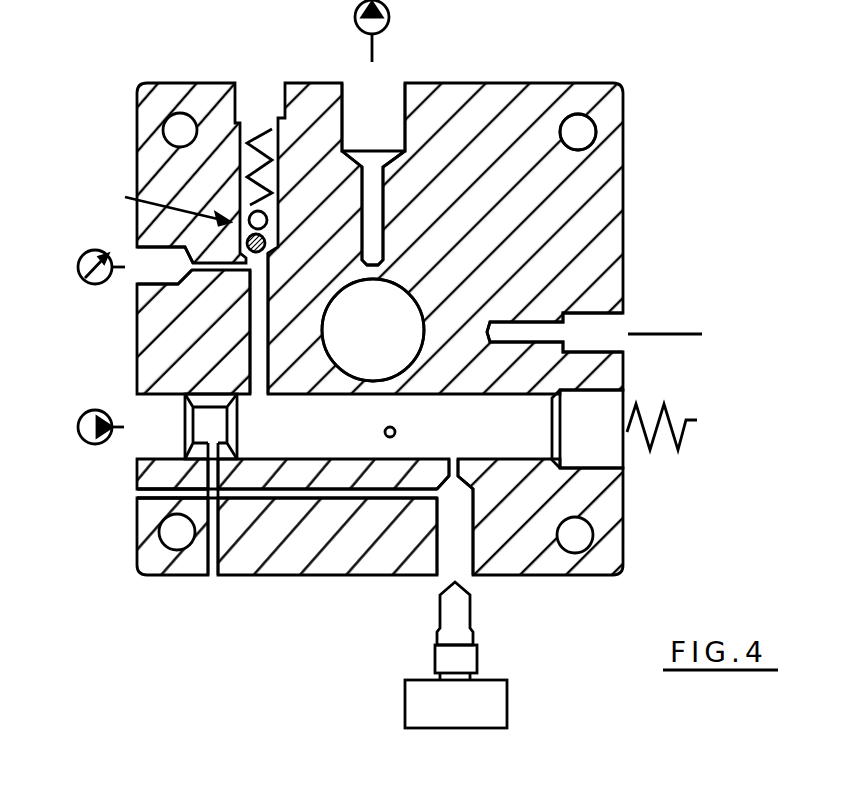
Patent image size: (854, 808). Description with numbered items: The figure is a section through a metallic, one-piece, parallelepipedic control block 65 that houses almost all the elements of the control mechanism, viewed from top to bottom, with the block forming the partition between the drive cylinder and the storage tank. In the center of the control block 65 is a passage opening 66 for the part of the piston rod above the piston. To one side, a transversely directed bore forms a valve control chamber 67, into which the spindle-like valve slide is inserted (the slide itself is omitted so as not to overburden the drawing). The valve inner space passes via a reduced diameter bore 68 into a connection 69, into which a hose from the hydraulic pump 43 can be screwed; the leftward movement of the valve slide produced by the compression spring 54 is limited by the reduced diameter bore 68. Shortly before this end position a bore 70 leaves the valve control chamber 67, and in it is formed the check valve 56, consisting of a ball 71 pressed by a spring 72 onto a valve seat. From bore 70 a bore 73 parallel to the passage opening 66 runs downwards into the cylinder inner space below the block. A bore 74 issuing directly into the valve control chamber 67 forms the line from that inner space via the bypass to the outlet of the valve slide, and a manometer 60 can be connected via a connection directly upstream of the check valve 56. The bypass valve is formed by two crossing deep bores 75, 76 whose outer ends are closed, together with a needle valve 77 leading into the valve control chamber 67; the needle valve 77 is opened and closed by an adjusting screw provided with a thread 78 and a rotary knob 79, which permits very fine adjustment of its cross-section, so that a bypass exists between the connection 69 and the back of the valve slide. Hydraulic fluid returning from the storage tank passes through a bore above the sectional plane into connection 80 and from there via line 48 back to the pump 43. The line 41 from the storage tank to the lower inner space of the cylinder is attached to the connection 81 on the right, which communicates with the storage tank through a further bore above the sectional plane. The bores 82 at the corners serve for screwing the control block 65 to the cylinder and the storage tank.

The line 41 is at (660, 336).
The hydraulic pump 43 is at (389, 17).
The line 48 is at (372, 49).
The compression spring 54 is at (675, 427).
The check valve 56 is at (158, 202).
The manometer 60 is at (95, 284).
The control block 65 is at (602, 162).
The passage opening 66 is at (375, 305).
The valve control chamber 67 is at (532, 433).
The reduced diameter bore 68 is at (138, 498).
The connection 69 is at (153, 438).
The bore 70 is at (255, 350).
The ball 71 is at (248, 242).
The spring 72 is at (258, 128).
The bore 73 is at (252, 214).
The bore 74 is at (395, 432).
The deep bore 75 is at (213, 558).
The deep bore 76 is at (310, 497).
The needle valve 77 is at (455, 487).
The thread 78 is at (467, 657).
The rotary knob 79 is at (492, 703).
The connection 80 is at (383, 105).
The connection 81 is at (608, 322).
The bores 82 is at (573, 132).